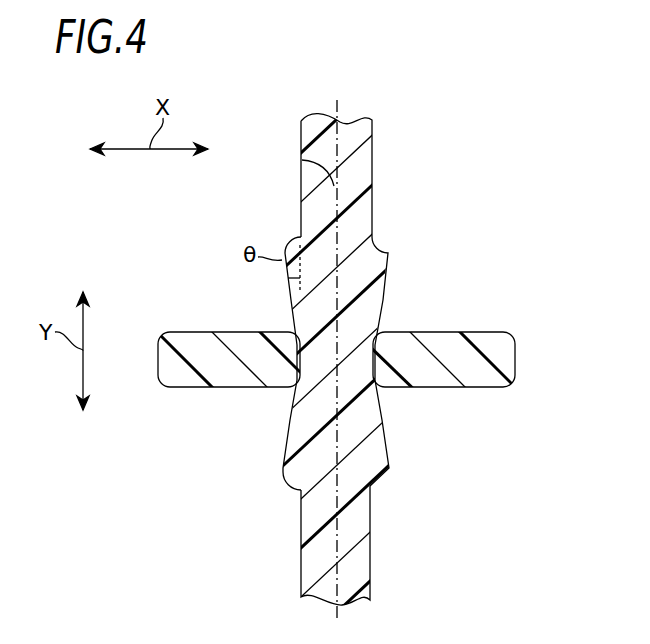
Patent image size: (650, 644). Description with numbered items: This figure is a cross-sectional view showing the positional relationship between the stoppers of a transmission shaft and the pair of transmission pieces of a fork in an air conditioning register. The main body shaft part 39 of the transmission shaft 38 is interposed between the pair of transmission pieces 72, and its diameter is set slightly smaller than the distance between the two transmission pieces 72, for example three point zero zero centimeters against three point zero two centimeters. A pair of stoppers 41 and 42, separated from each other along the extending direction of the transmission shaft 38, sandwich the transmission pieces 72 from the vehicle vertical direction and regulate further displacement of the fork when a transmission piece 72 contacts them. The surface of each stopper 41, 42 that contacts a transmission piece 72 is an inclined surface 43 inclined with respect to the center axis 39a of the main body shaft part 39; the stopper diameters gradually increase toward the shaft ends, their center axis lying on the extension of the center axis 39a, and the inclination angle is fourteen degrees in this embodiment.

The transmission shaft 38 is at (388, 191).
The main body shaft part 39 is at (368, 358).
The center axis 39a is at (302, 160).
The stopper 41 is at (390, 250).
The stopper 42 is at (390, 460).
The inclined surface 43 is at (294, 302).
The transmission pieces 72 is at (183, 337).